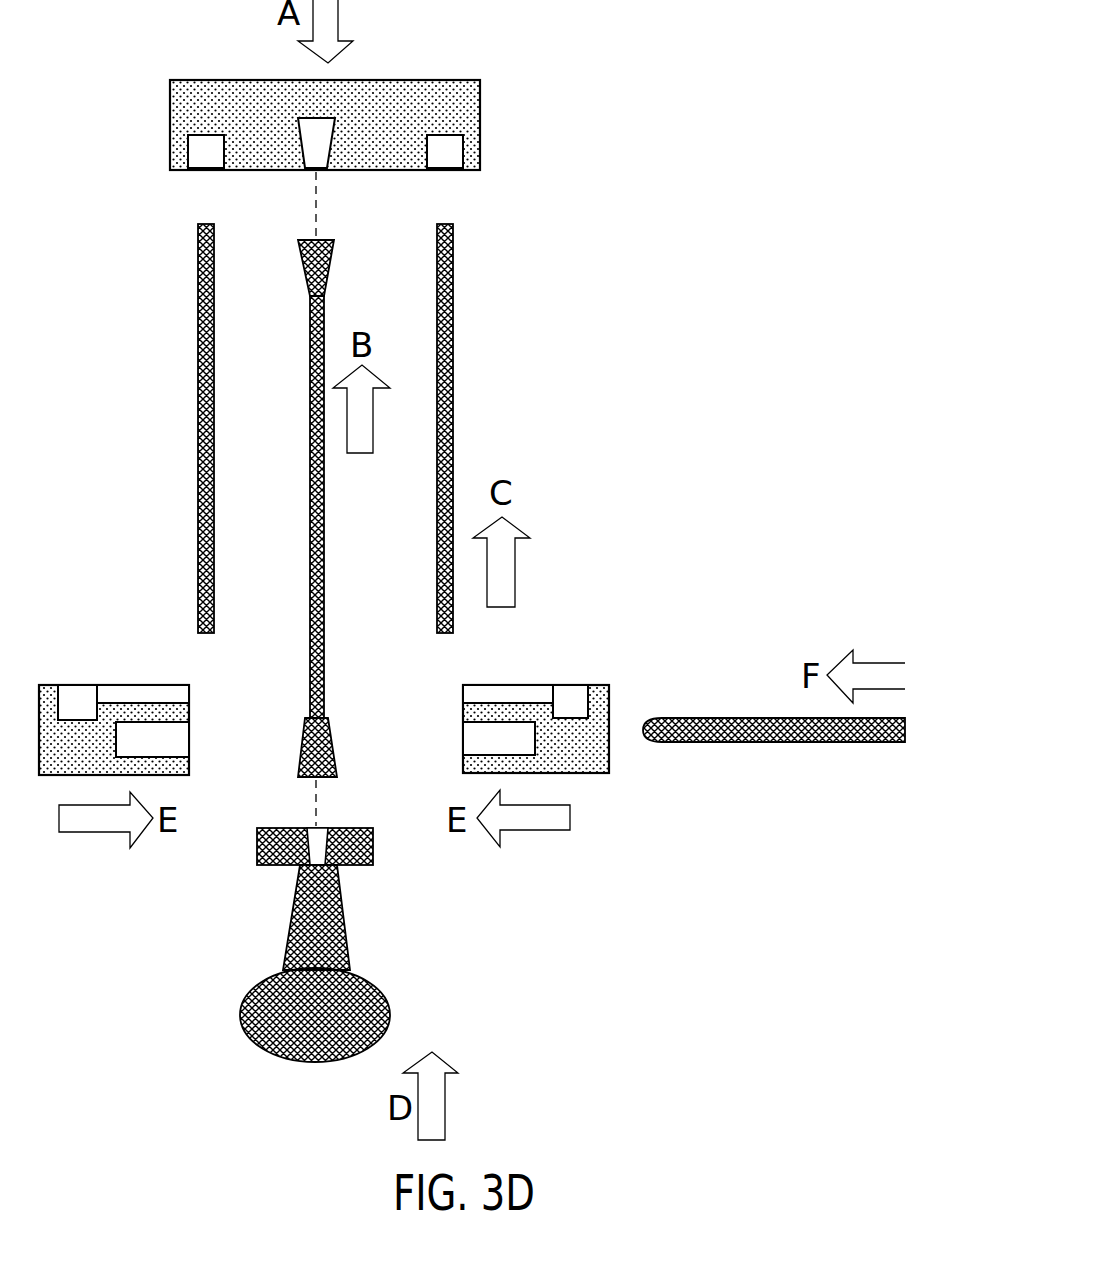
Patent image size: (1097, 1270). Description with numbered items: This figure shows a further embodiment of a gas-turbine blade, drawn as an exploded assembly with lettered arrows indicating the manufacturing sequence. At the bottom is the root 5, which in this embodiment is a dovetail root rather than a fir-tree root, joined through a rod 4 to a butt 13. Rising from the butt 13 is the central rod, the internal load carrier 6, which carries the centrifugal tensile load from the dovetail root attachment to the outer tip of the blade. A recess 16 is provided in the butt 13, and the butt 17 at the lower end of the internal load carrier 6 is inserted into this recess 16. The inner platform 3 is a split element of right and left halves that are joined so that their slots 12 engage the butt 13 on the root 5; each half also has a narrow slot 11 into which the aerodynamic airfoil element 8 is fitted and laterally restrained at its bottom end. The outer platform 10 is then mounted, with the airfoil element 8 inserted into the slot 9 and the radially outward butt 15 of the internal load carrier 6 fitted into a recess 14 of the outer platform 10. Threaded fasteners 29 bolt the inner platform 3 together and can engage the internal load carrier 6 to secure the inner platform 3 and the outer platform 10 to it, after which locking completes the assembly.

The inner platform 3 is at (605, 730).
The rod 4 is at (340, 910).
The root 5 is at (390, 1006).
The internal load carrier 6 is at (310, 518).
The airfoil element 8 is at (453, 318).
The slot 9 is at (197, 153).
The outer platform 10 is at (447, 92).
The slot 11 is at (75, 698).
The slots 12 is at (172, 745).
The butt 13 is at (373, 850).
The recess 14 is at (327, 128).
The radially outward butt 15 is at (332, 262).
The recess 16 is at (292, 865).
The butt 17 is at (330, 740).
The threaded fasteners 29 is at (748, 742).